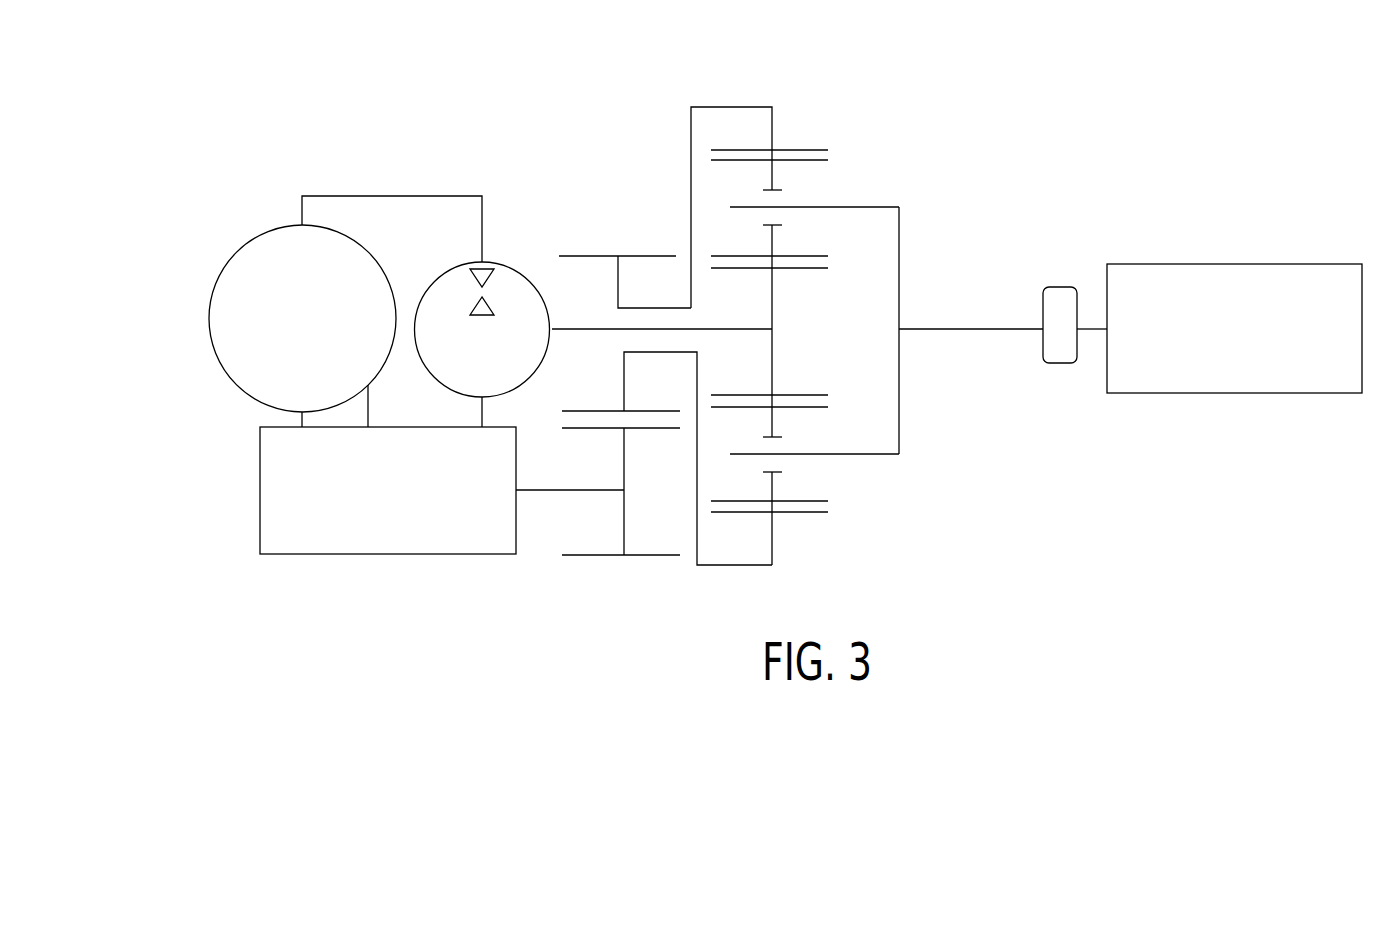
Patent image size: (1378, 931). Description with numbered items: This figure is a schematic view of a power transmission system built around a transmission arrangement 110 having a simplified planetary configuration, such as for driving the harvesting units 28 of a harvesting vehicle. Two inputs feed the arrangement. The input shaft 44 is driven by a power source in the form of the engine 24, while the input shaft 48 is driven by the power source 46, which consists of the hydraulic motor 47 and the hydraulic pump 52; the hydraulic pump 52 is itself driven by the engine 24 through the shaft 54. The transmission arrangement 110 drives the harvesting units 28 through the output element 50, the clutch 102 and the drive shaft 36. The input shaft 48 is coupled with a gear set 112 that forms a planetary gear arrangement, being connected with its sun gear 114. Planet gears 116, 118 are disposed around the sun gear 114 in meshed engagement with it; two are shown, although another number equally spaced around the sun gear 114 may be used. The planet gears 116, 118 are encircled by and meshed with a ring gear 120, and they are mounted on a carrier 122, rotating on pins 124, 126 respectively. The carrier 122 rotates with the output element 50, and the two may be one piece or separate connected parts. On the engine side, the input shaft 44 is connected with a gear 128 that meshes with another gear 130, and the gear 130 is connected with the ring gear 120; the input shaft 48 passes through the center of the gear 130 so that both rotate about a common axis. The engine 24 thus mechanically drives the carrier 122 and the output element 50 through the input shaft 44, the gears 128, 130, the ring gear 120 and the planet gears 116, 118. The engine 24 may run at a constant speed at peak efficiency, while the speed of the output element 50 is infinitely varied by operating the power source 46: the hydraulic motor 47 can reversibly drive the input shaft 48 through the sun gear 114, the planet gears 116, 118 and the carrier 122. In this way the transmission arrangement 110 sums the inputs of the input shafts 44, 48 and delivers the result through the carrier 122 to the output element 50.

The engine 24 is at (401, 508).
The harvesting units 28 is at (1248, 342).
The drive shaft 36 is at (1092, 332).
The input shaft 44 is at (542, 490).
The power source 46 is at (412, 182).
The hydraulic motor 47 is at (496, 368).
The input shaft 48 is at (593, 329).
The output element 50 is at (970, 330).
The hydraulic pump 52 is at (316, 334).
The shaft 54 is at (302, 415).
The clutch 102 is at (1062, 287).
The transmission arrangement 110 is at (577, 128).
The gear set 112 is at (785, 135).
The sun gear 114 is at (773, 293).
The planet gear 116 is at (803, 160).
The planet gear 118 is at (807, 501).
The ring gear 120 is at (803, 150).
The carrier 122 is at (902, 278).
The pin 124 is at (800, 207).
The pin 126 is at (807, 454).
The gear 128 is at (592, 555).
The gear 130 is at (590, 256).